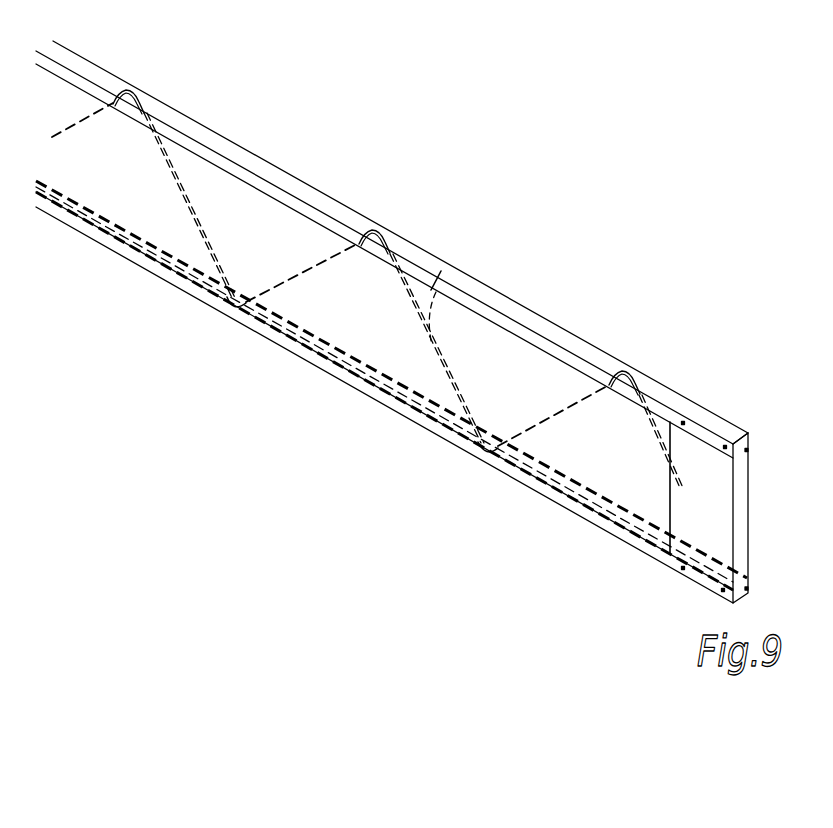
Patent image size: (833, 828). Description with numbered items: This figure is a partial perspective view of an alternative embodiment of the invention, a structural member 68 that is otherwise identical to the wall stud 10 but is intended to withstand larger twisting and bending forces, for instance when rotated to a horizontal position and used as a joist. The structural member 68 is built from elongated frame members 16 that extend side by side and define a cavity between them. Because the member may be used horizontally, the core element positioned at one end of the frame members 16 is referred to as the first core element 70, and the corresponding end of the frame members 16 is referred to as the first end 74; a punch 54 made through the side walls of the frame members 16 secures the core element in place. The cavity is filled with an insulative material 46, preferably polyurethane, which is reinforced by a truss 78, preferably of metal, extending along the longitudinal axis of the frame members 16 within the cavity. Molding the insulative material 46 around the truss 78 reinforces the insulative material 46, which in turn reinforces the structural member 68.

The wall stud 10 is at (297, 93).
The frame members 16 is at (392, 322).
The insulative material 46 is at (293, 300).
The punch 54 is at (718, 598).
The structural member 68 is at (524, 291).
The first core element 70 is at (726, 475).
The first end 74 is at (745, 522).
The truss 78 is at (440, 268).